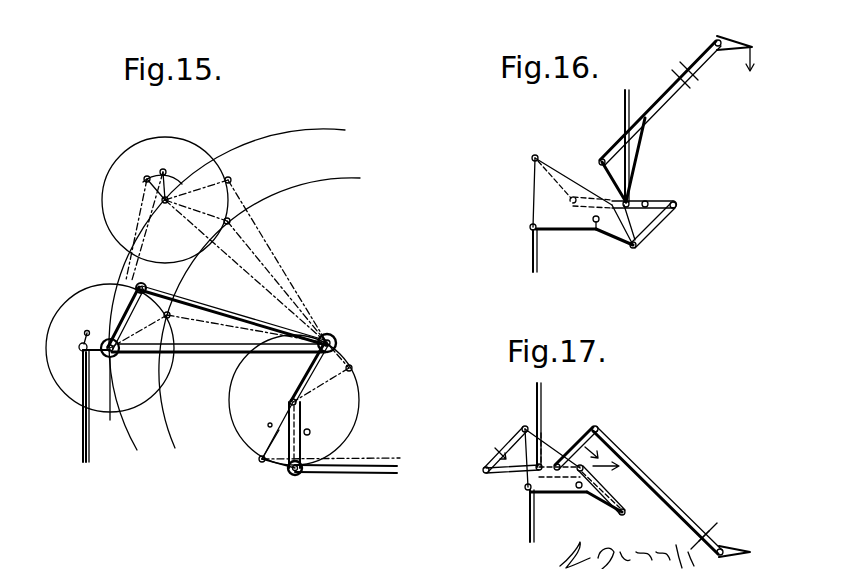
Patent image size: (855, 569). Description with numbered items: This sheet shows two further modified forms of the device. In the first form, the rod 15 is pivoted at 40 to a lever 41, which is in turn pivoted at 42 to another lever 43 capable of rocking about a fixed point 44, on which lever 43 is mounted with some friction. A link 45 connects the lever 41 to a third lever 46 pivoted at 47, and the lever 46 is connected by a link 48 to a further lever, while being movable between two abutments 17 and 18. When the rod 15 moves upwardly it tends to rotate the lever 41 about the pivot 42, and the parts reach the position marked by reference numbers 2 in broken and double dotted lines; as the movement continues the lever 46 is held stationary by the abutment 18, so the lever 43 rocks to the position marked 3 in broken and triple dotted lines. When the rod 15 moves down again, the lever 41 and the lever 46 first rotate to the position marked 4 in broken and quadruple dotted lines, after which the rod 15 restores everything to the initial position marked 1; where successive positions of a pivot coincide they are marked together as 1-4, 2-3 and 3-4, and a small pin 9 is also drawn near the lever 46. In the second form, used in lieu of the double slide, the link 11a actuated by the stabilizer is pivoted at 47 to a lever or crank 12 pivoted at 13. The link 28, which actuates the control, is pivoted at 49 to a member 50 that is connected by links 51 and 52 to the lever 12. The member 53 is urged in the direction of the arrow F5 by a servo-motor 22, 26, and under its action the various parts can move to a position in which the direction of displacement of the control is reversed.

In FIG. 15, the initial position 1 is at (78, 407).
In FIG. 15, the second position 2 is at (92, 380).
In FIG. 15, the third position 3 is at (229, 247).
In FIG. 15, the fourth position 4 is at (222, 248).
In FIG. 15, the pin 9 is at (268, 415).
In FIG. 15, the rod 15 is at (85, 407).
In FIG. 15, the abutment 17 is at (310, 432).
In FIG. 15, the abutment 18 is at (261, 444).
In FIG. 15, the pivot 40 is at (78, 348).
In FIG. 15, the lever 41 is at (123, 330).
In FIG. 15, the pivot 42 is at (105, 396).
In FIG. 15, the lever 43 is at (222, 343).
In FIG. 15, the fixed point 44 is at (348, 344).
In FIG. 15, the link 45 is at (234, 315).
In FIG. 15, the third lever 46 is at (302, 372).
In FIG. 15, the pivot 47 is at (290, 403).
In FIG. 16, the pivot 47 is at (530, 227).
In FIG. 15, the link 48 is at (351, 474).
In FIG. 15, the positions one to four 1-4 is at (335, 409).
In FIG. 15, the positions two to three 2-3 is at (324, 414).
In FIG. 15, the positions three to four 3-4 is at (244, 270).
In FIG. 16, the link 11a is at (531, 266).
In FIG. 17, the link 11a is at (528, 540).
In FIG. 16, the lever or crank 12 is at (580, 231).
In FIG. 17, the lever or crank 12 is at (568, 494).
In FIG. 16, the pivot 13 is at (597, 232).
In FIG. 16, the servo-motor 22 is at (648, 117).
In FIG. 17, the servo-motor 22 is at (664, 490).
In FIG. 16, the servo-motor 26 is at (740, 40).
In FIG. 17, the servo-motor 26 is at (738, 545).
In FIG. 16, the link 28 is at (624, 107).
In FIG. 17, the link 28 is at (535, 395).
In FIG. 16, the pivot 49 is at (647, 231).
In FIG. 16, the member 50 is at (663, 200).
In FIG. 16, the link 51 is at (573, 196).
In FIG. 17, the link 51 is at (513, 441).
In FIG. 16, the link 52 is at (666, 218).
In FIG. 17, the link 52 is at (590, 497).
In FIG. 16, the member 53 is at (612, 176).
In FIG. 17, the member 53 is at (580, 444).
In FIG. 16, the arrow F5 is at (763, 56).